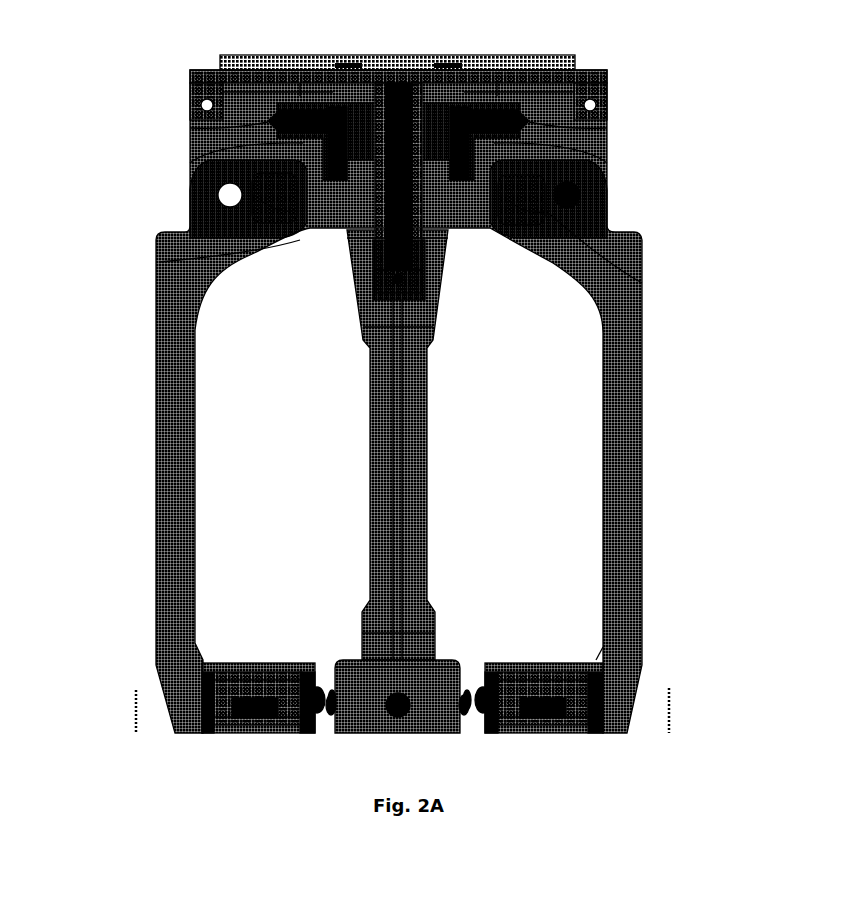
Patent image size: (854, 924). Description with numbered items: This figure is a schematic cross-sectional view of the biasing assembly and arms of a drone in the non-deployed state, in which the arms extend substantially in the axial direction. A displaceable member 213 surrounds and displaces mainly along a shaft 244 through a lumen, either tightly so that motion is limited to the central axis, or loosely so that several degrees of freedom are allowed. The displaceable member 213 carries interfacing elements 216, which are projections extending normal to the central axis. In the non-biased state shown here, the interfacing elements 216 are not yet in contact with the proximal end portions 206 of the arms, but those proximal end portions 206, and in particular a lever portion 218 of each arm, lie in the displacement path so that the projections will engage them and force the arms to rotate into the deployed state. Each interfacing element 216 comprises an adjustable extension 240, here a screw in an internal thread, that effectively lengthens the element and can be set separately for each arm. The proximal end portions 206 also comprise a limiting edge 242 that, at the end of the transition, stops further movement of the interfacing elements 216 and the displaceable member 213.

The proximal end portion 206 is at (268, 260).
The displaceable member 213 is at (352, 92).
The interfacing element 216 is at (190, 163).
The lever portion 218 is at (187, 207).
The adjustable extension 240 is at (190, 128).
The limiting edge 242 is at (160, 262).
The shaft 244 is at (448, 233).